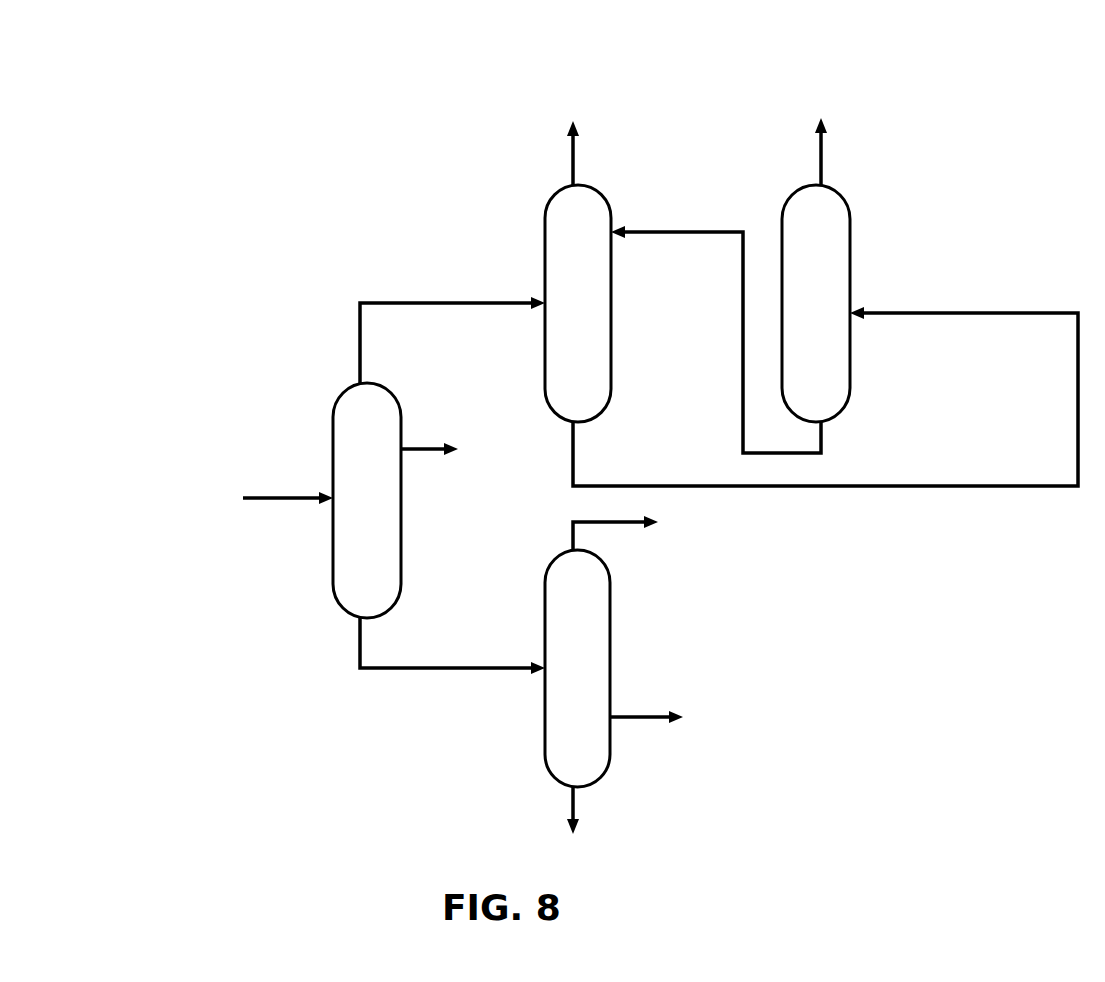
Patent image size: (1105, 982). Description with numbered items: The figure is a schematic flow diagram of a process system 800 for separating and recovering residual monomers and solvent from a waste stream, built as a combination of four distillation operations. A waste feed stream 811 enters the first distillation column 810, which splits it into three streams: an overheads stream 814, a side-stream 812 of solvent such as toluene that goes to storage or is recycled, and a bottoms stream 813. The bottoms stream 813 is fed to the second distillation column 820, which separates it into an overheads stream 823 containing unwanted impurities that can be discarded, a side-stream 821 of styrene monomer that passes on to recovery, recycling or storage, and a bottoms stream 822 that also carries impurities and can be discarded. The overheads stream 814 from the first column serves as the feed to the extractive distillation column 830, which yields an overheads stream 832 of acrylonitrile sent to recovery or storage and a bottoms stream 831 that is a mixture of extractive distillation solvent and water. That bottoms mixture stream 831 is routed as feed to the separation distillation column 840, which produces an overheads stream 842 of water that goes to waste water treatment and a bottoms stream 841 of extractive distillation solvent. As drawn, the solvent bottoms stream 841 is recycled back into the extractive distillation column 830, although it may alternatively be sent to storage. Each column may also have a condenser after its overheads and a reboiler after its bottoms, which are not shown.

The process system 800 is at (428, 50).
The first distillation column 810 is at (367, 500).
The waste feed stream 811 is at (278, 498).
The side-stream 812 is at (410, 450).
The bottoms stream 813 is at (457, 670).
The overheads stream 814 is at (460, 303).
The second distillation column 820 is at (577, 668).
The side-stream 821 is at (635, 717).
The bottoms stream 822 is at (573, 808).
The overheads stream 823 is at (615, 522).
The extractive distillation column 830 is at (578, 303).
The bottoms stream 831 is at (704, 485).
The overheads stream 832 is at (573, 160).
The separation distillation column 840 is at (816, 303).
The bottoms stream 841 is at (645, 232).
The overheads stream 842 is at (821, 150).